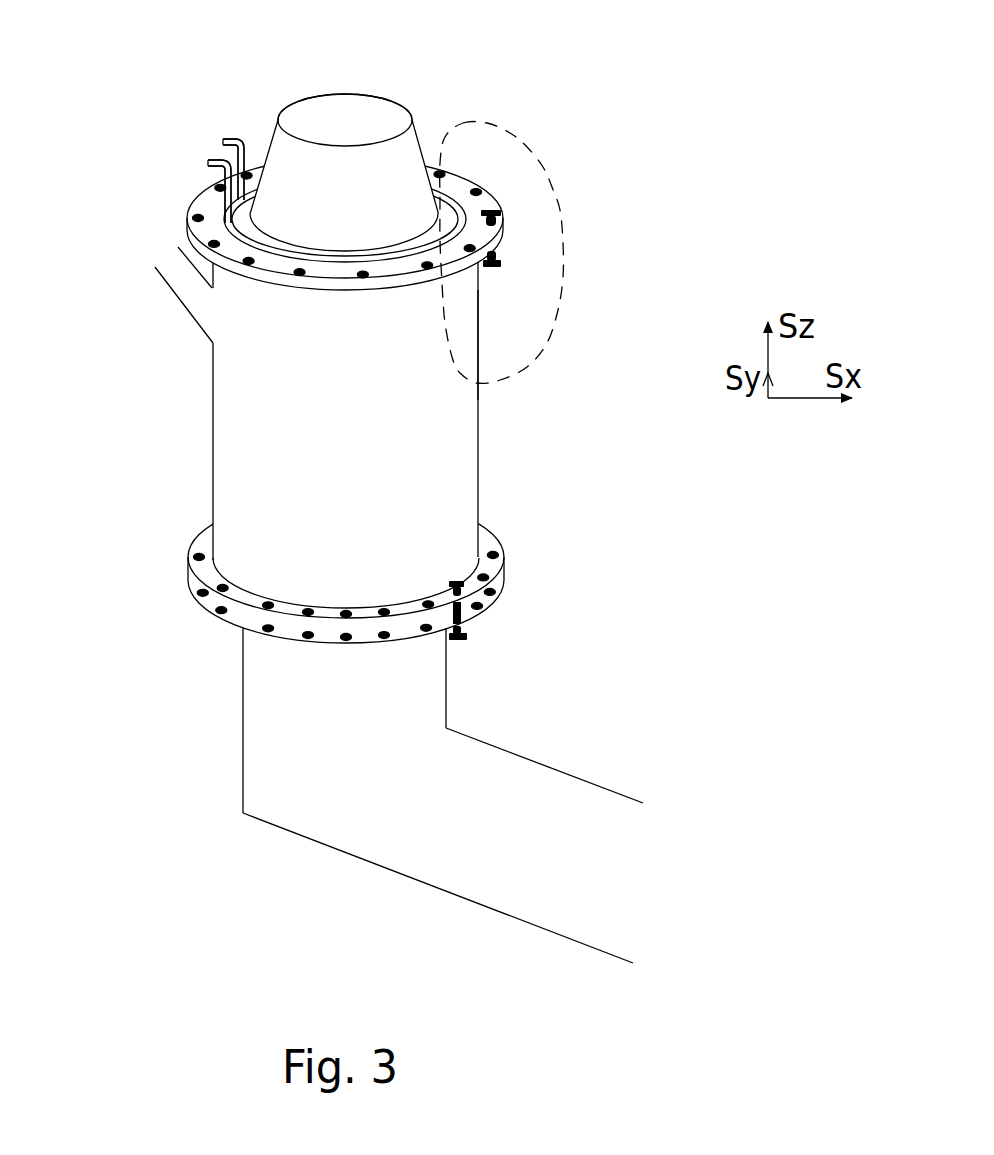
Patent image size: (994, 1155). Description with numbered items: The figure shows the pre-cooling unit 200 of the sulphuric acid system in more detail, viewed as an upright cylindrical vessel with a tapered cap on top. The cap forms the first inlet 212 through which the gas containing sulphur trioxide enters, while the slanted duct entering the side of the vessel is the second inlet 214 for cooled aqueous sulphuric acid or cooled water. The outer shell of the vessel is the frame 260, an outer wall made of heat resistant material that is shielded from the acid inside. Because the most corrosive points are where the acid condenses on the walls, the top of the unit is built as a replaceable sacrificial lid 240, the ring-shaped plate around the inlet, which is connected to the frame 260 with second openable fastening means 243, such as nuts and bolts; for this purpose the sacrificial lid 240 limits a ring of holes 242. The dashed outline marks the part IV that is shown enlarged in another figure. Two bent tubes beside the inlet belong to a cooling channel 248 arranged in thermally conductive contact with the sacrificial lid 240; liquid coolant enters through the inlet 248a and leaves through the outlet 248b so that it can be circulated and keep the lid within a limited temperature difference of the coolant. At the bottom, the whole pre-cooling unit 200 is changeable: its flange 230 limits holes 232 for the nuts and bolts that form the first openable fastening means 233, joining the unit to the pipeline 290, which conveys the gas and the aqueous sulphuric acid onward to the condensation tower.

The pre-cooling unit 200 is at (369, 439).
The first inlet 212 is at (316, 121).
The second inlet 214 is at (164, 258).
The flange 230 is at (492, 541).
The holes 232 is at (483, 576).
The first openable fastening means 233 is at (466, 588).
The sacrificial lid 240 is at (478, 208).
The holes 242 is at (442, 172).
The second openable fastening means 243 is at (498, 260).
The cooling channel 248 is at (233, 237).
The inlet 248a is at (219, 139).
The outlet 248b is at (208, 161).
The frame 260 is at (479, 318).
The pipeline 290 is at (369, 758).
The part IV is at (563, 281).